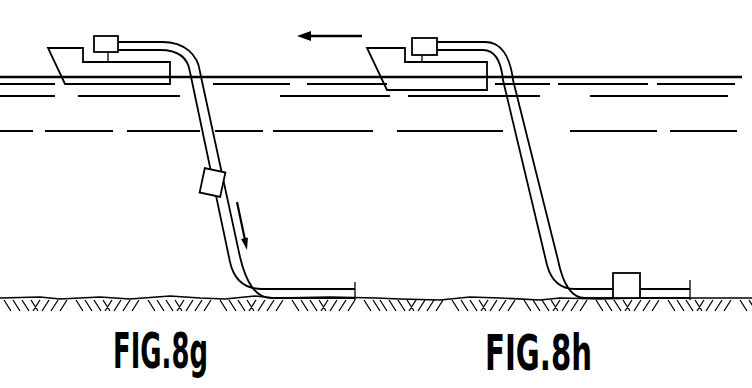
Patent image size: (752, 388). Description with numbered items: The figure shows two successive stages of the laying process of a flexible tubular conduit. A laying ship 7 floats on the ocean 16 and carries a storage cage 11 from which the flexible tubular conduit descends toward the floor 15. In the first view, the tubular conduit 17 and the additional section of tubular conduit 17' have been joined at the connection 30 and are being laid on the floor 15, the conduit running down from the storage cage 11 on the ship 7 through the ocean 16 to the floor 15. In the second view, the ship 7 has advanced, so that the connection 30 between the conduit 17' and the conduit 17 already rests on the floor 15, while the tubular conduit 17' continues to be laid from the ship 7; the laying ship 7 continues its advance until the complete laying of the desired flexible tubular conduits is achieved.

In FIG. 8G, the ship 7 is at (60, 42).
In FIG. 8H, the ship 7 is at (378, 67).
In FIG. 8G, the storage cage 11 is at (108, 36).
In FIG. 8H, the storage cage 11 is at (421, 38).
In FIG. 8H, the floor 15 is at (452, 297).
In FIG. 8G, the ocean 16 is at (374, 170).
In FIG. 8G, the tubular conduit 17 is at (292, 266).
In FIG. 8H, the tubular conduit 17 is at (618, 266).
In FIG. 8G, the additional section of tubular conduit 17' is at (183, 152).
In FIG. 8H, the additional section of tubular conduit 17' is at (506, 153).
In FIG. 8G, the connection 30 is at (200, 182).
In FIG. 8H, the connection 30 is at (627, 283).